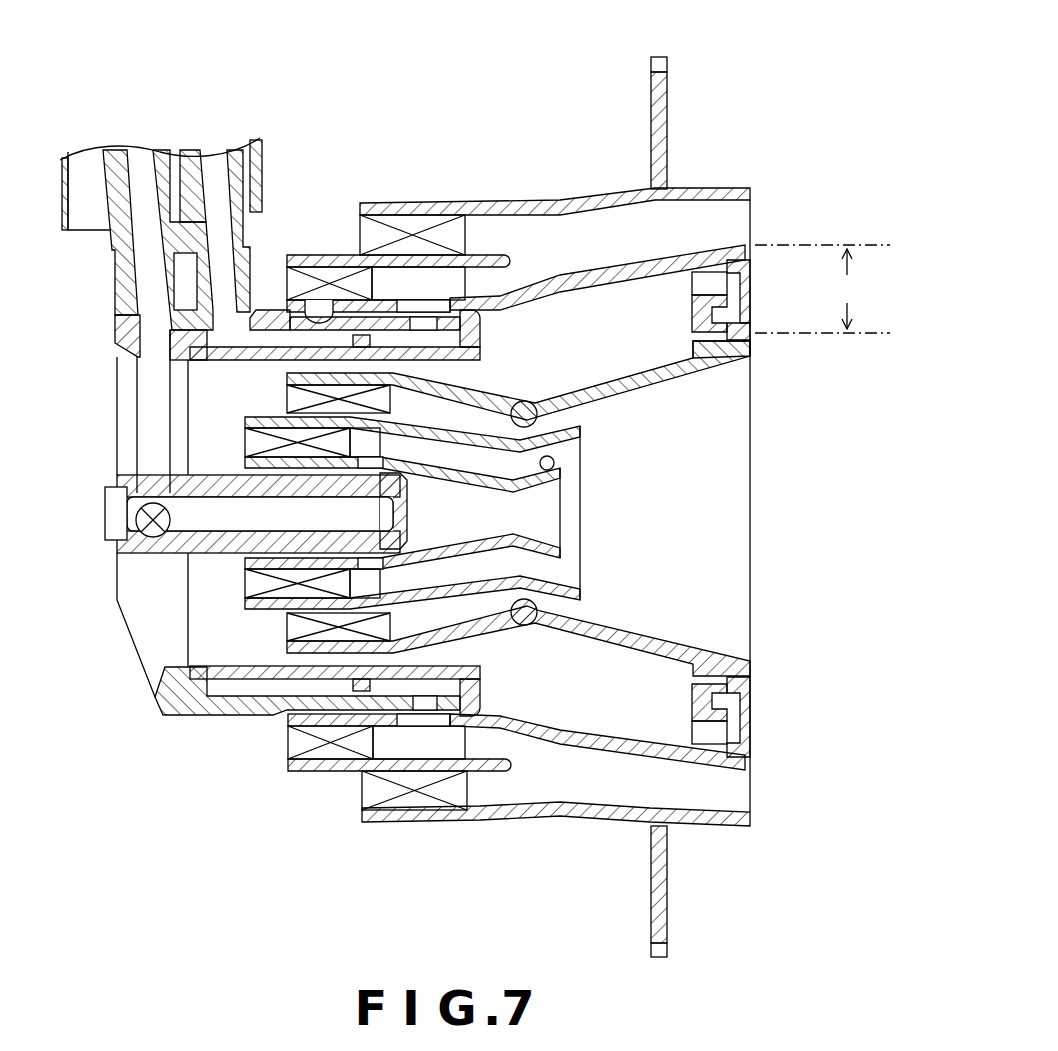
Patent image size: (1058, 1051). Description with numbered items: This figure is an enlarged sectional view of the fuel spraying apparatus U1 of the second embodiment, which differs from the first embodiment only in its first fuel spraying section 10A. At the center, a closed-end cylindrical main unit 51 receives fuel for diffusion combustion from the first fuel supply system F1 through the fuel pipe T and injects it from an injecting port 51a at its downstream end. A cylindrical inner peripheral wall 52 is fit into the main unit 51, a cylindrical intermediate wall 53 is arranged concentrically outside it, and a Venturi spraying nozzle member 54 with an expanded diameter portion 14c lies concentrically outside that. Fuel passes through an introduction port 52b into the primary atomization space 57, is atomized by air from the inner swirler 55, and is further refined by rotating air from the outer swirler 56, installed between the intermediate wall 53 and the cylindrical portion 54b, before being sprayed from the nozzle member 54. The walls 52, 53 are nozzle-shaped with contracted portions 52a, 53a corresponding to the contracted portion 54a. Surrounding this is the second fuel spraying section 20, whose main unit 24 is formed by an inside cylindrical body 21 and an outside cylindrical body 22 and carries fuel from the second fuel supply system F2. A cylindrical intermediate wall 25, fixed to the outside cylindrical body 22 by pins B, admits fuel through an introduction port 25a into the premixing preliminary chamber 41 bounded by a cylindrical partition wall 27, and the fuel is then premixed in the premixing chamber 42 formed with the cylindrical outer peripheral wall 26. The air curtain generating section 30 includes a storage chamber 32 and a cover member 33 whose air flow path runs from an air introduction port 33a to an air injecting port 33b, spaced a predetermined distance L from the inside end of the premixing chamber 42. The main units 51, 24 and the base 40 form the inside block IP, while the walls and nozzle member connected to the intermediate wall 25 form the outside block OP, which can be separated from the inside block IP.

The fuel spraying apparatus U1 is at (692, 80).
The first fuel supply system F1 is at (156, 445).
The second fuel supply system F2 is at (228, 325).
The fuel pipe T is at (122, 280).
The outside cylindrical body 22 is at (263, 307).
The pins B is at (318, 317).
The premixing preliminary chamber 41 is at (397, 280).
The introduction port 25a is at (438, 300).
The cylindrical partition wall 27 is at (490, 260).
The cylindrical intermediate wall 25 is at (534, 289).
The cylindrical outer peripheral wall 26 is at (710, 184).
The second fuel spraying section 20 is at (753, 201).
The air curtain generating section 30 is at (767, 252).
The premixing chamber 42 is at (641, 244).
The cover member 33 is at (756, 281).
The predetermined distance L is at (839, 289).
The main unit 24 is at (487, 328).
The air introduction port 33a is at (692, 284).
The storage chamber 32 is at (598, 356).
The air injecting port 33b is at (752, 337).
The expanded diameter portion 14c is at (720, 359).
The contracted portion 54a is at (530, 420).
The cylindrical portion 54b is at (292, 378).
The inside cylindrical body 21 is at (213, 366).
The cylindrical intermediate wall 53 is at (582, 427).
The Venturi spraying nozzle member 54 is at (662, 381).
The contracted portion 53a is at (548, 452).
The introduction port 52b is at (381, 451).
The cylindrical inner peripheral wall 52 is at (547, 462).
The main unit 51 is at (399, 505).
The contracted portion 52a is at (503, 489).
The primary atomization space 57 is at (510, 565).
The injecting port 51a is at (381, 561).
The inside block IP is at (106, 548).
The inner swirler 55 is at (243, 581).
The outer swirler 56 is at (284, 628).
The base 40 is at (137, 657).
The first fuel spraying section 10A is at (770, 600).
The outside block OP is at (765, 795).